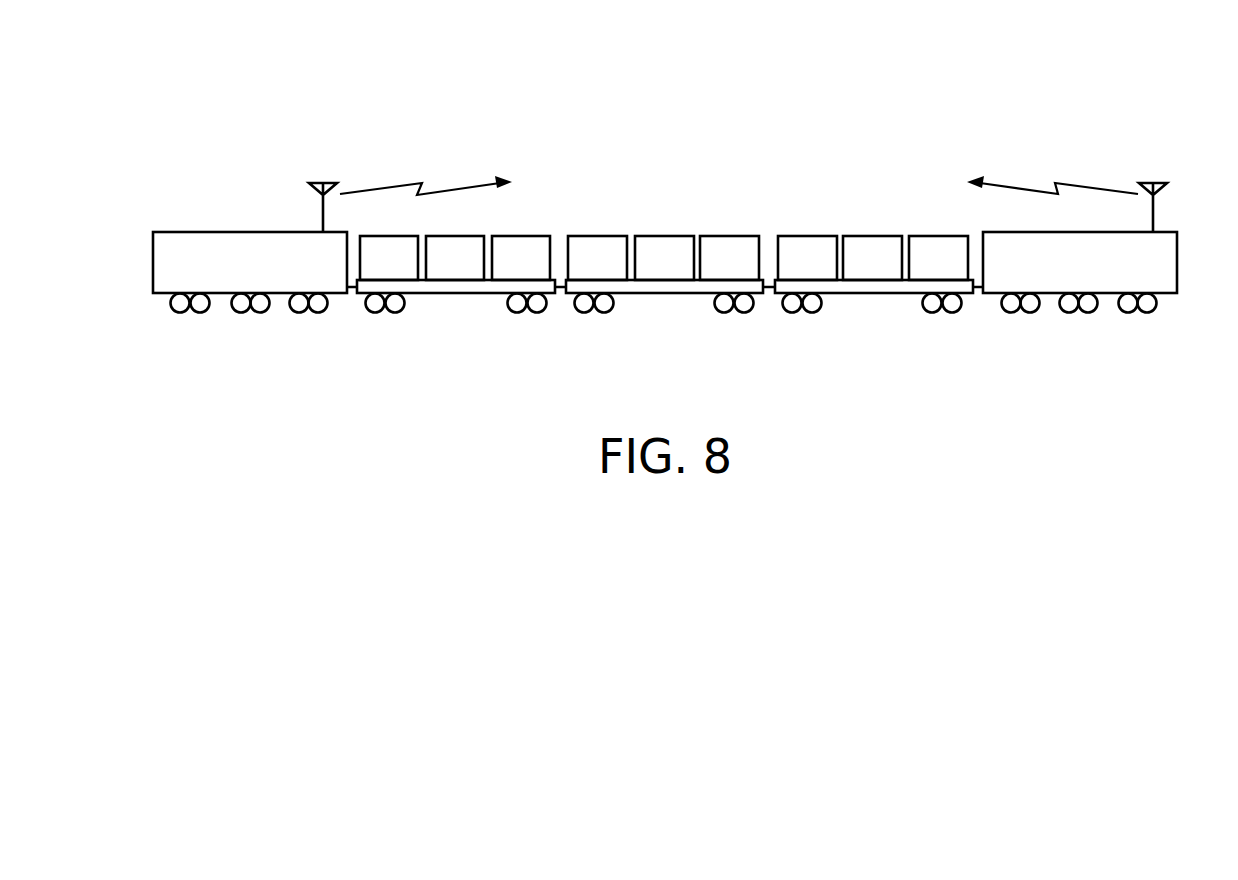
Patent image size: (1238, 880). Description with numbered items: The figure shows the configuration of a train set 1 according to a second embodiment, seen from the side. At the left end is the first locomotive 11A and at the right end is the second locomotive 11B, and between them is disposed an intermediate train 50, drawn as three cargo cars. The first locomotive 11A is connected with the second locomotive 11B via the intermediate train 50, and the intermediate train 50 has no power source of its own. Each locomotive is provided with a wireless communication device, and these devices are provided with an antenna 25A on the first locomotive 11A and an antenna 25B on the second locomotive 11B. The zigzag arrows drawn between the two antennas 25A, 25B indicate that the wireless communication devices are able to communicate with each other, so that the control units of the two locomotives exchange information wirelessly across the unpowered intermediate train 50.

The train set 1 is at (1100, 104).
The first locomotive 11A is at (203, 231).
The second locomotive 11B is at (1173, 231).
The antenna 25A is at (323, 182).
The antenna 25B is at (1153, 182).
The intermediate train 50 is at (459, 294).